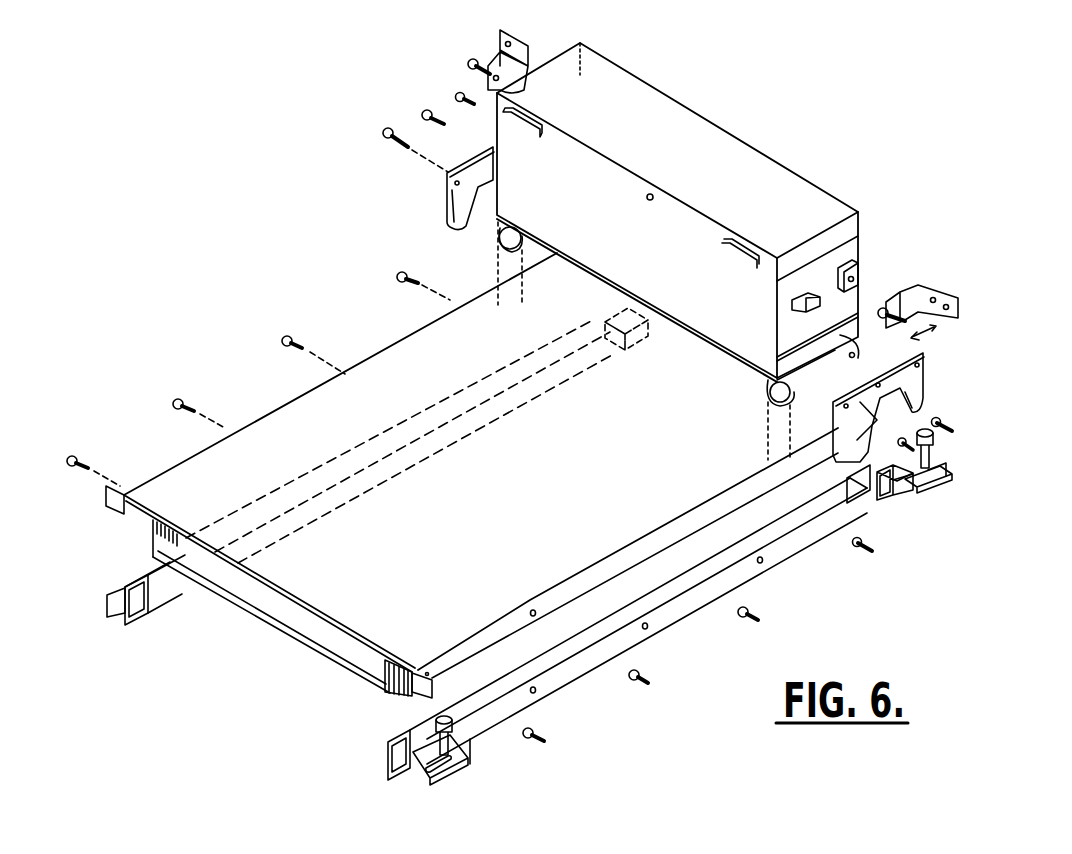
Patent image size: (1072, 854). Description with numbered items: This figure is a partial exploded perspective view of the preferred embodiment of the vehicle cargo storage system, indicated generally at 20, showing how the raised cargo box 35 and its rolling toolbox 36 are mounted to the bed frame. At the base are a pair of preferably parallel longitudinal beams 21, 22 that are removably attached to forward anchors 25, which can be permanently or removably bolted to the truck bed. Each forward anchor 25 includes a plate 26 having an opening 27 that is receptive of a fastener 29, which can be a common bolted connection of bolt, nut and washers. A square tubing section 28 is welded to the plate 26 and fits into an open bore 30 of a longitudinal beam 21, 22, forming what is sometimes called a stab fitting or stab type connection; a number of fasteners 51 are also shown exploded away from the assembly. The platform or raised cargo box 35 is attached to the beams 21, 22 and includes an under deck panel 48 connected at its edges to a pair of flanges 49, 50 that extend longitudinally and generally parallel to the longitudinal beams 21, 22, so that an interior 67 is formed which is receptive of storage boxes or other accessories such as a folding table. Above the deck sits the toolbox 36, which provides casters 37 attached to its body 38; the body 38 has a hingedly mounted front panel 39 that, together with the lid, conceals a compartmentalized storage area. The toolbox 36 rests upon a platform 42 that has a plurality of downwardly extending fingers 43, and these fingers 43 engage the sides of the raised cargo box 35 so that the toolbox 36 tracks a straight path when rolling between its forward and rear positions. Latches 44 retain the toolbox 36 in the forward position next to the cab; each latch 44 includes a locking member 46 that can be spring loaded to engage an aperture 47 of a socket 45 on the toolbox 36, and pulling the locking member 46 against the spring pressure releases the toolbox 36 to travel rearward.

The cart assembly 20 is at (292, 172).
The longitudinal beam 21 is at (426, 462).
The longitudinal beam 22 is at (666, 630).
The forward anchor 25 is at (622, 350).
The plate 26 is at (946, 482).
The opening 27 is at (947, 474).
The square tubing section 28 is at (893, 505).
The fastener 29 is at (936, 442).
The open bore 30 is at (136, 612).
The raised cargo box 35 is at (202, 478).
The toolbox 36 is at (686, 130).
The casters 37 is at (516, 252).
The body 38 is at (860, 284).
The front panel 39 is at (622, 258).
The platform 42 is at (447, 206).
The fingers 43 is at (470, 216).
The latch 44 is at (522, 40).
The socket 45 is at (840, 270).
The locking member 46 is at (470, 62).
The aperture 47 is at (842, 286).
The under deck panel 48 is at (352, 652).
The flange 49 is at (152, 540).
The flange 50 is at (382, 682).
The fastener 51 is at (290, 346).
The interior 67 is at (288, 622).